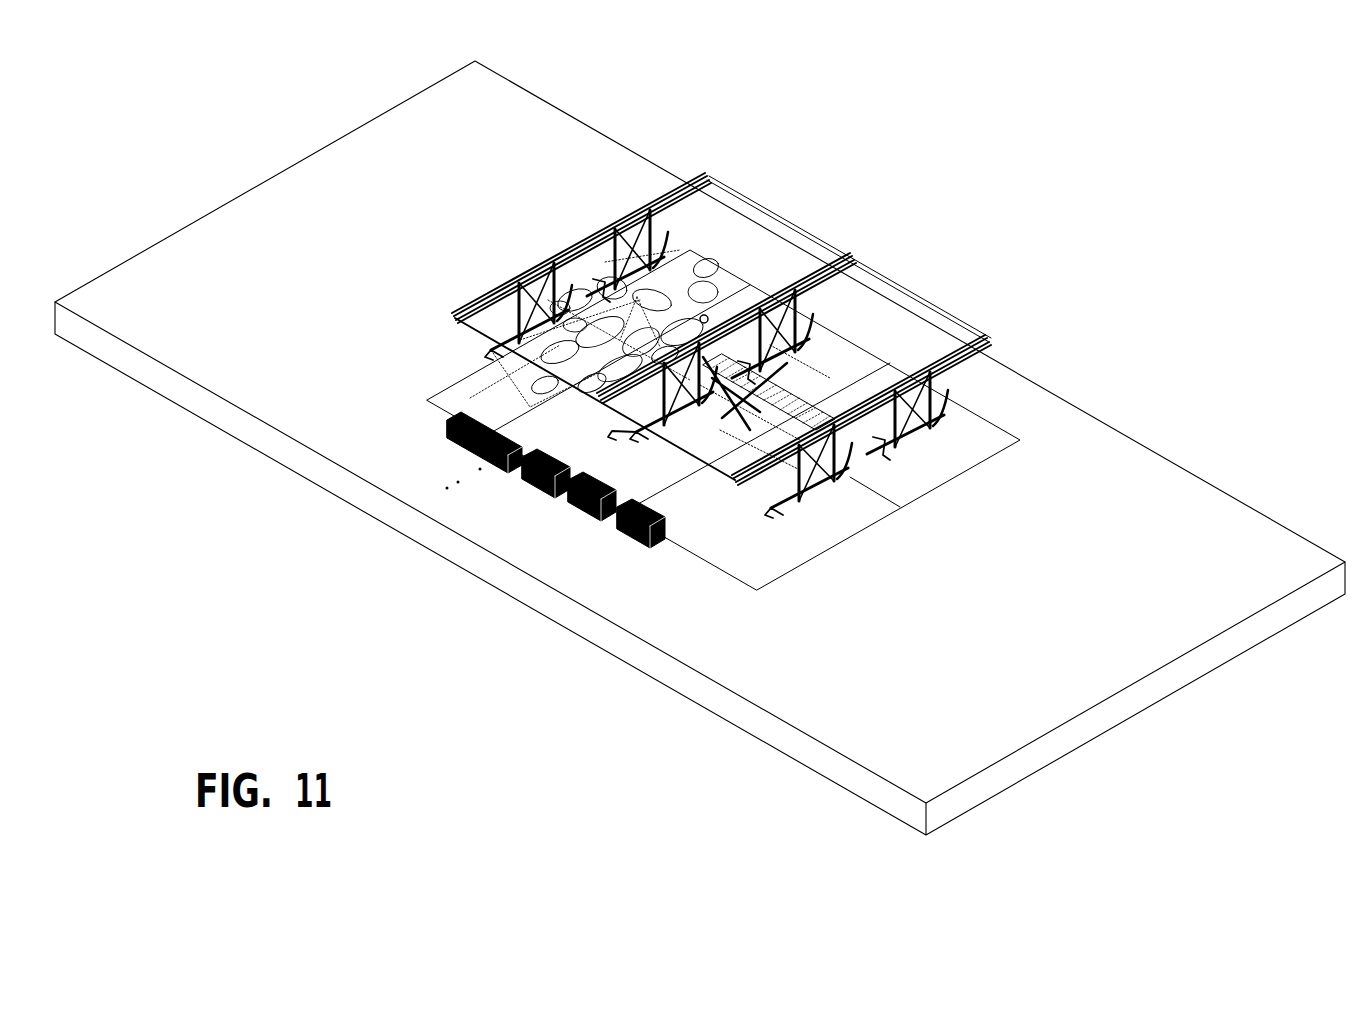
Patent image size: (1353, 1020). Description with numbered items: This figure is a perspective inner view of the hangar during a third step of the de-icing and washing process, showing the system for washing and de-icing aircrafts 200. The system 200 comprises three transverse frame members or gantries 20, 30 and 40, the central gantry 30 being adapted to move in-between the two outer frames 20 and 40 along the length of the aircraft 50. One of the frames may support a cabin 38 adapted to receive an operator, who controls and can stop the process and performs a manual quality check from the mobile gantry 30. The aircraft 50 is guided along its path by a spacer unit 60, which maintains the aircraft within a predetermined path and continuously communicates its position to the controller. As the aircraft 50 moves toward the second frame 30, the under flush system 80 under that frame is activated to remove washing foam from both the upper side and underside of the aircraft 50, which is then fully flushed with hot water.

The system for washing and de-icing aircrafts 200 is at (784, 195).
The first transverse frame member 20 is at (710, 180).
The second transverse frame member 30 is at (845, 257).
The third transverse frame member 40 is at (990, 340).
The cabin 38 is at (709, 314).
The aircraft 50 is at (758, 417).
The spacer unit 60 is at (845, 480).
The under flush system 80 is at (490, 394).